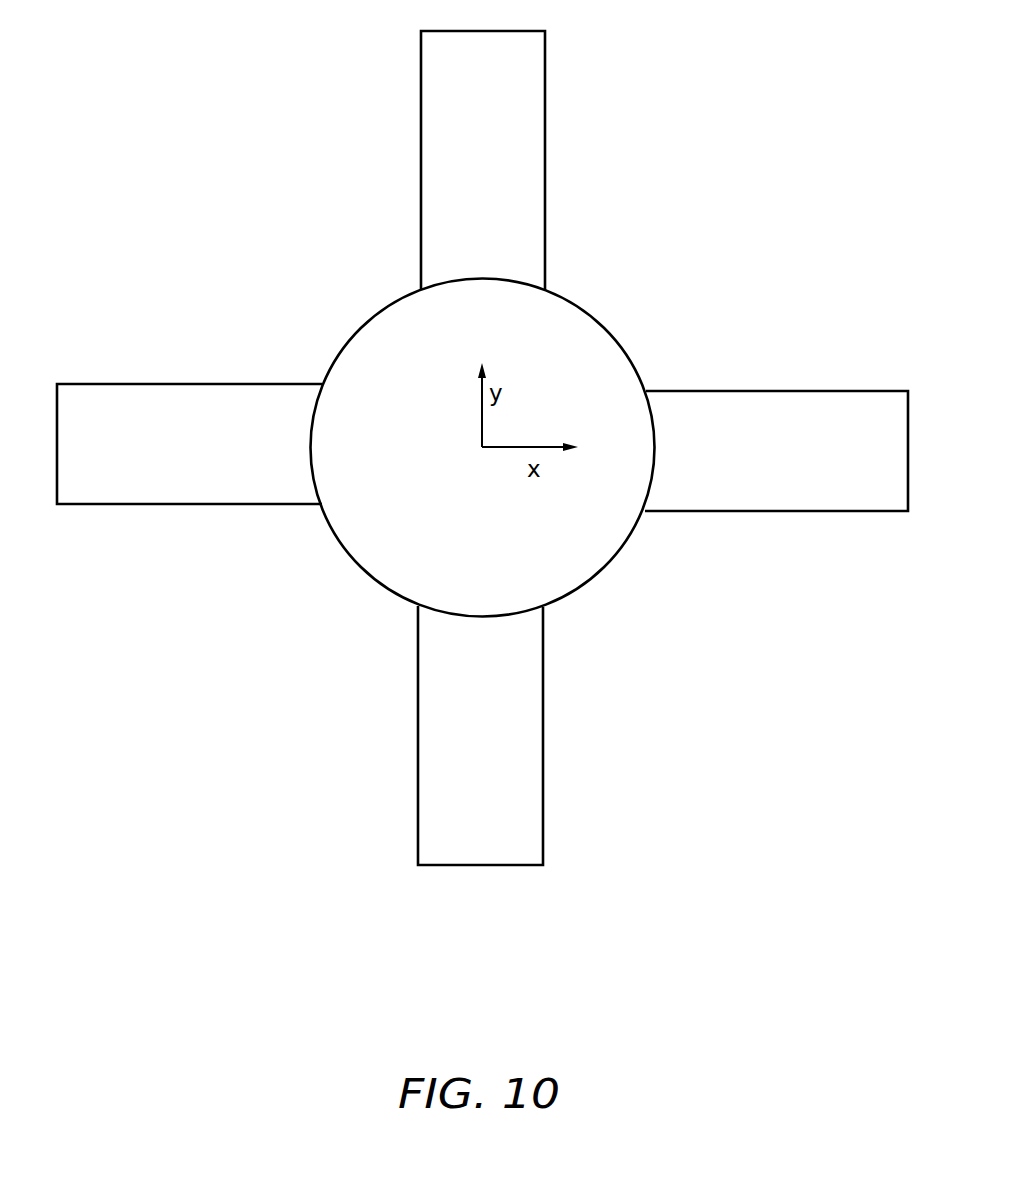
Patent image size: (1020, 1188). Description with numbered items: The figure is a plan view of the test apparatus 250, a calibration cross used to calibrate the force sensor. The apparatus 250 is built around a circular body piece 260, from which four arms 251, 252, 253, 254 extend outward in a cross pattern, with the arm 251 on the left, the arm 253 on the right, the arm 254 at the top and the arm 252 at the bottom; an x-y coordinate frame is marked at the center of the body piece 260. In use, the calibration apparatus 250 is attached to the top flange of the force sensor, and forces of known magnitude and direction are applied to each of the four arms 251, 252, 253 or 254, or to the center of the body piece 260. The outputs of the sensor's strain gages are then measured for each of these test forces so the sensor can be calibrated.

The test apparatus 250 is at (803, 73).
The arm 251 is at (147, 381).
The arm 252 is at (543, 767).
The arm 253 is at (800, 391).
The arm 254 is at (546, 102).
The body piece 260 is at (608, 563).